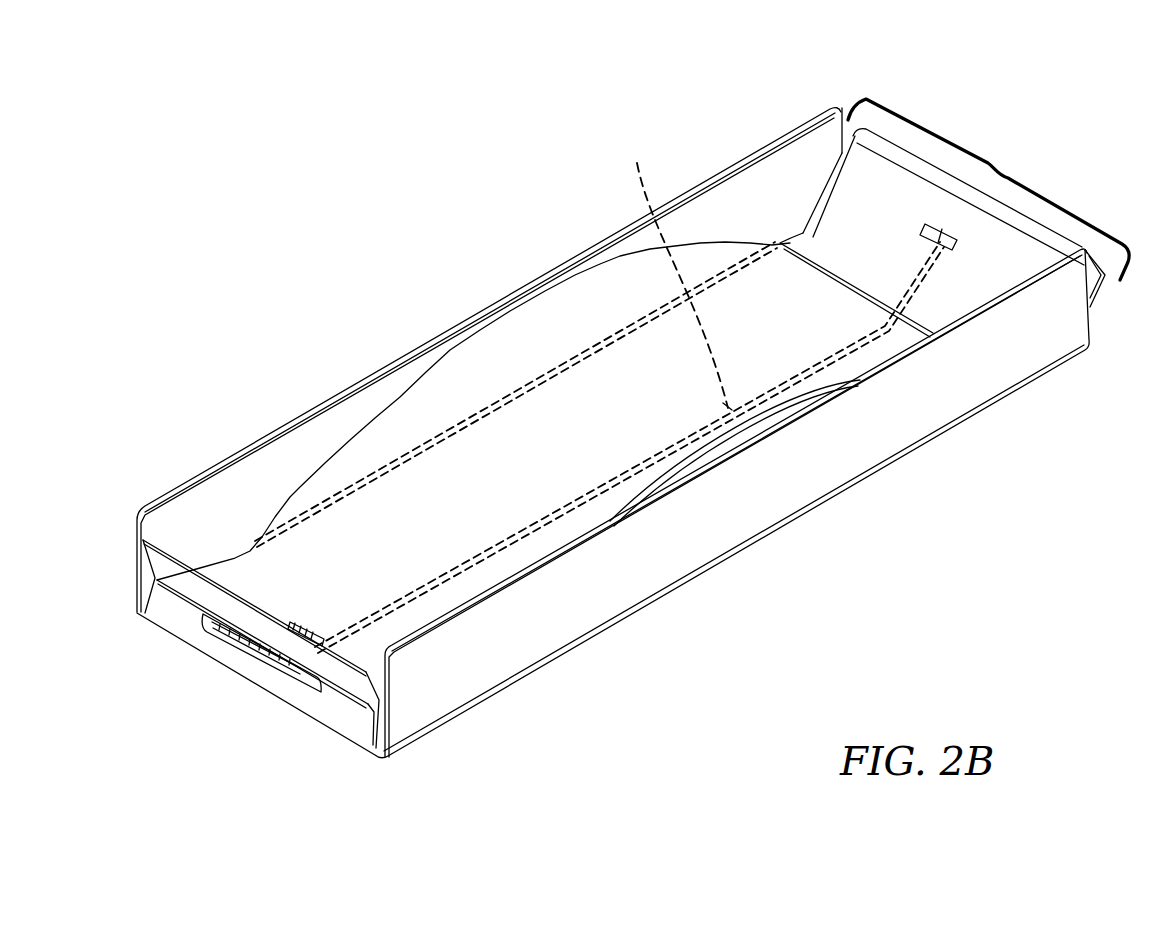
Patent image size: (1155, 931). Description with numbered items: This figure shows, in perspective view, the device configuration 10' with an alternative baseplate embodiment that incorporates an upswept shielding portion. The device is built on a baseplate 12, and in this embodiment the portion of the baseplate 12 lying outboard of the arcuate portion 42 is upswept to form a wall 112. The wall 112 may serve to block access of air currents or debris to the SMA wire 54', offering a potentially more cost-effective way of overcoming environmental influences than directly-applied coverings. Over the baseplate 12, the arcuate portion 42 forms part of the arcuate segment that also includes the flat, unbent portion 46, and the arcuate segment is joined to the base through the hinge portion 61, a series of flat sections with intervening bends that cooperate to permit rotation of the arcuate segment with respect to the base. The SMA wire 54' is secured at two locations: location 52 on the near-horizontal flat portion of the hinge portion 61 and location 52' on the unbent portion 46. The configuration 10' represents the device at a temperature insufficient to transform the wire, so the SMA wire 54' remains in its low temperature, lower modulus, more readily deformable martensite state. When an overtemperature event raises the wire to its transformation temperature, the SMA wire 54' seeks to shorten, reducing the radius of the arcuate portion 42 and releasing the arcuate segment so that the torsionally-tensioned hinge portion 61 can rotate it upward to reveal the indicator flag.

The device configuration 10' is at (782, 94).
The baseplate 12 is at (372, 730).
The wall 112 is at (404, 354).
The arcuate portion 42 is at (553, 403).
The unbent portion 46 is at (272, 593).
The securing location 52 is at (636, 345).
The securing location 52' is at (516, 444).
The SMA wire in martensite phase 54' is at (678, 274).
The hinge portion 61 is at (1000, 168).